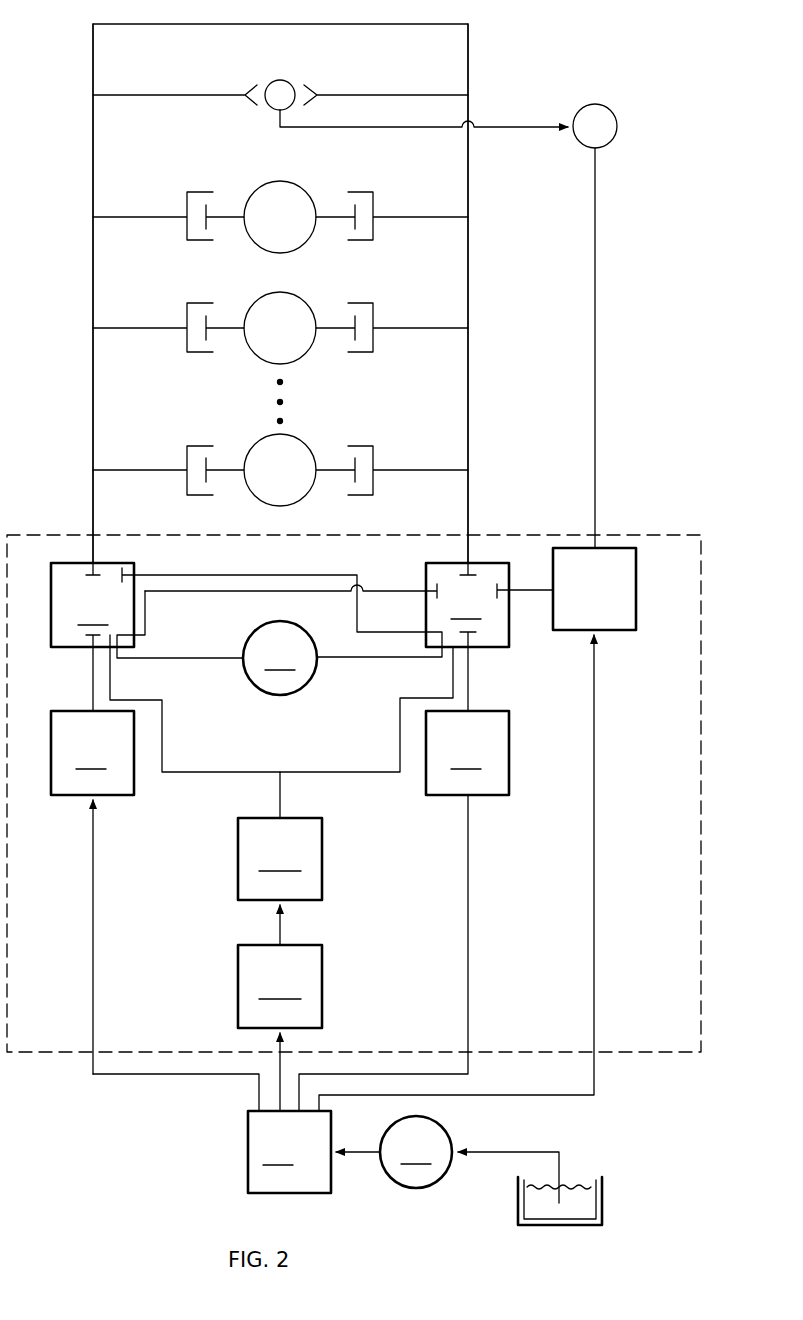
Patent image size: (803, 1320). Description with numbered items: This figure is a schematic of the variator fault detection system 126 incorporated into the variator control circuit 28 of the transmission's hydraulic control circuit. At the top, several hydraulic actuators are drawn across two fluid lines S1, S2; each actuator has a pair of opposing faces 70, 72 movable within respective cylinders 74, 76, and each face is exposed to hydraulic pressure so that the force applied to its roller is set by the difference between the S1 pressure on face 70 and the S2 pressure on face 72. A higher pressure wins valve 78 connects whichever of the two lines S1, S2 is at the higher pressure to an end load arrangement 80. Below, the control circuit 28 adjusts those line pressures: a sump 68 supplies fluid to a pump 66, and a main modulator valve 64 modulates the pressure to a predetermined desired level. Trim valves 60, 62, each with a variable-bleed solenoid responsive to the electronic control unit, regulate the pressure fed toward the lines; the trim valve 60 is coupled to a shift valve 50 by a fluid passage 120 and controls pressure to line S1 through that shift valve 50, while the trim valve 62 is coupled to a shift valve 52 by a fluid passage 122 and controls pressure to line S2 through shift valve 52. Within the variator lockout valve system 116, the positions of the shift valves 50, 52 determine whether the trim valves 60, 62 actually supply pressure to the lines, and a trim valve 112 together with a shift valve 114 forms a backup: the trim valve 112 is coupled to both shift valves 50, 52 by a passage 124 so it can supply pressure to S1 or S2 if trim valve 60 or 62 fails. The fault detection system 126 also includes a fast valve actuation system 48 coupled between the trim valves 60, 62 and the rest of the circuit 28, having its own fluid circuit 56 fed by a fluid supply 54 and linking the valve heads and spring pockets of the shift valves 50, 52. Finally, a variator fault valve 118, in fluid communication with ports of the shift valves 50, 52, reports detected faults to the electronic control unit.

The variator control circuit 28 is at (636, 182).
The fast valve actuation system 48 is at (367, 672).
The shift valve 50 is at (92, 605).
The shift valve 52 is at (467, 605).
The fluid supply 54 is at (280, 658).
The fluid circuit 56 is at (176, 604).
The trim valve 60 is at (92, 892).
The trim valve 62 is at (404, 911).
The main modulator valve 64 is at (343, 914).
The pump 66 is at (394, 1152).
The sump 68 is at (602, 1198).
The opposing face 70 is at (208, 315).
The opposing face 72 is at (355, 324).
The cylinder 74 is at (185, 340).
The cylinder 76 is at (374, 340).
The higher pressure wins valve 78 is at (313, 90).
The end load arrangement 80 is at (592, 104).
The trim valve 112 is at (280, 859).
The shift valve 114 is at (280, 966).
The variator lockout valve system 116 is at (208, 904).
The variator fault valve 118 is at (572, 589).
The fluid passage 120 is at (93, 680).
The fluid passage 122 is at (468, 678).
The passage 124 is at (210, 772).
The variator fault detection system 126 is at (701, 582).
The fluid line S1 is at (93, 502).
The fluid line S2 is at (468, 500).